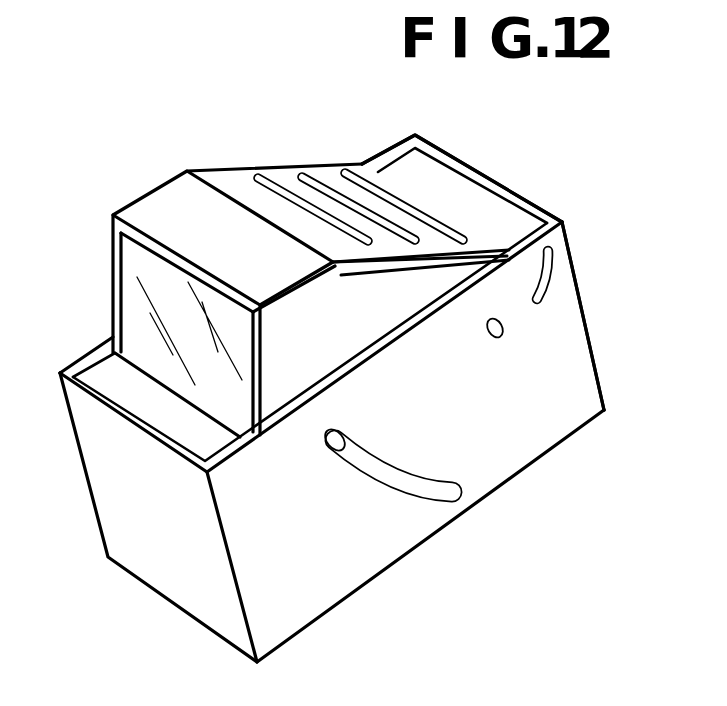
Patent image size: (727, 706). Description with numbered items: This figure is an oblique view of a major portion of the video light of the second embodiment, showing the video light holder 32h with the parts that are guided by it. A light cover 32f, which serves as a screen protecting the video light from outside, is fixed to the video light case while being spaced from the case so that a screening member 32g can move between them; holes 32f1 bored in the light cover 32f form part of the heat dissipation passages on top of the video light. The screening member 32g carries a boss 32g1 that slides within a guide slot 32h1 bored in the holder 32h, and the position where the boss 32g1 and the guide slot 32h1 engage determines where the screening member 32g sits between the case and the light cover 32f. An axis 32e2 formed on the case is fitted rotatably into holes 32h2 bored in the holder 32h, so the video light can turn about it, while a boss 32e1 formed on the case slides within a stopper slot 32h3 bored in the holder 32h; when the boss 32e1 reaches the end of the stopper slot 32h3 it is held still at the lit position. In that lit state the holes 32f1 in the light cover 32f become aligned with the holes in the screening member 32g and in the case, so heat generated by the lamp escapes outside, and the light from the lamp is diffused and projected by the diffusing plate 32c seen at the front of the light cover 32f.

The diffusing plate 32c is at (175, 295).
The light cover 32f is at (175, 217).
The holes 32f1 is at (362, 167).
The screening member 32g is at (467, 263).
The boss 32g1 is at (537, 298).
The video light holder 32h is at (550, 208).
The guide slot 32h1 is at (552, 260).
The holes 32h2 is at (497, 340).
The stopper slot 32h3 is at (427, 492).
The boss 32e1 is at (357, 457).
The axis 32e2 is at (502, 335).